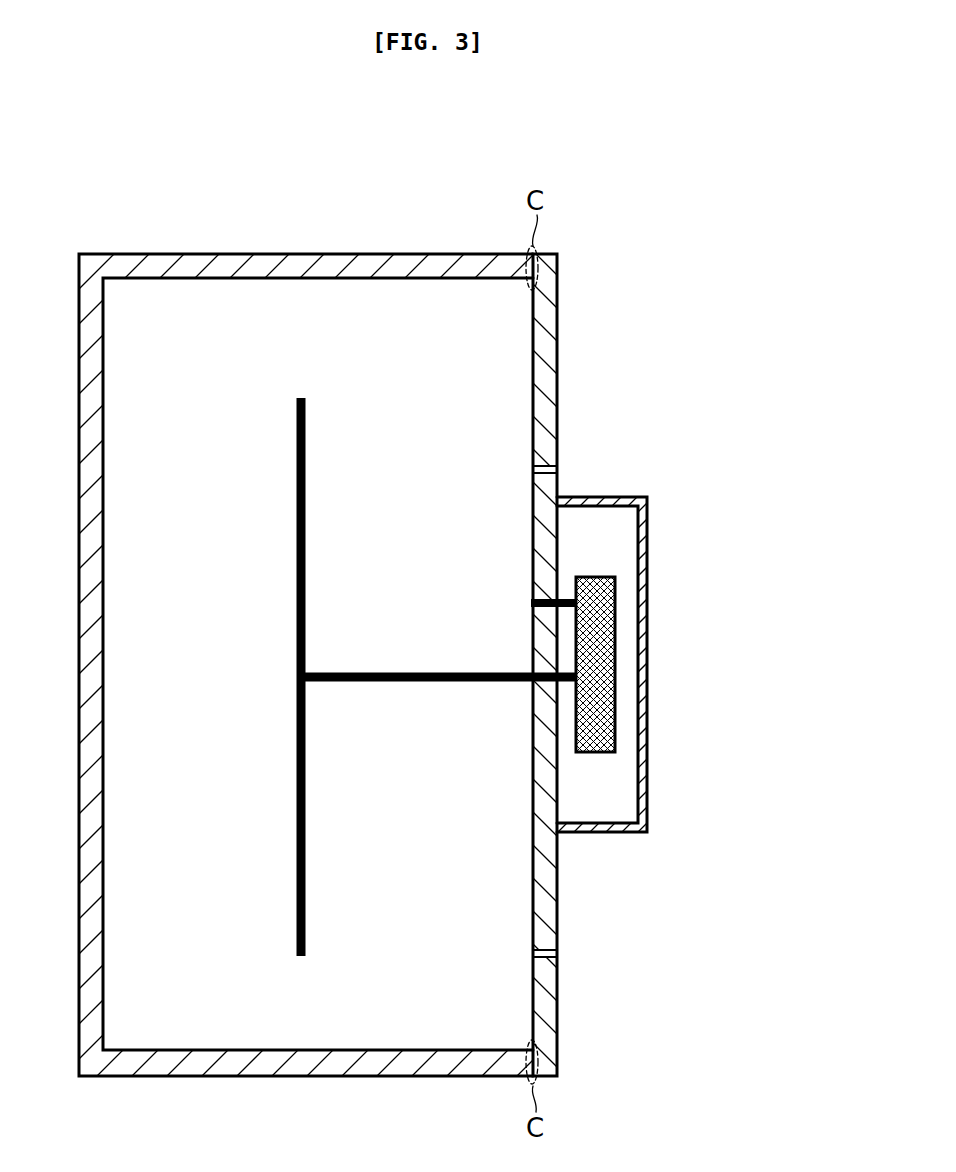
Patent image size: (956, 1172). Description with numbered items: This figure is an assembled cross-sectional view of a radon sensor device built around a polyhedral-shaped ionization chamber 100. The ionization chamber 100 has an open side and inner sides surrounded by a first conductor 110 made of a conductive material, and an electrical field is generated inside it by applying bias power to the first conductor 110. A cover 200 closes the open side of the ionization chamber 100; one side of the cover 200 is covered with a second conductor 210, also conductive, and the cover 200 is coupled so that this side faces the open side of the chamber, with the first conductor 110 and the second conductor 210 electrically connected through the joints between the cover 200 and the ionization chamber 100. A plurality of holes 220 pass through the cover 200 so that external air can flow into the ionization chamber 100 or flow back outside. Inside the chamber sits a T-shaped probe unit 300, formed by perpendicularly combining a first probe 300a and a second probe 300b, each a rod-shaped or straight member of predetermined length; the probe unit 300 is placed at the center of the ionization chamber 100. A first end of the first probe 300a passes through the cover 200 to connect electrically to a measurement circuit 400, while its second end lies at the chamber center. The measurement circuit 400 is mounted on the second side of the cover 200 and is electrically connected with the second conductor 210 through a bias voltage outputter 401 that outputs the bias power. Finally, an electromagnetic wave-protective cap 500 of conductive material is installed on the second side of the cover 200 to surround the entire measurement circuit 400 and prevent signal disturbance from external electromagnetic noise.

The ionization chamber 100 is at (306, 589).
The first conductor 110 is at (140, 270).
The cover 200 is at (625, 665).
The second conductor 210 is at (548, 368).
The holes 220 is at (557, 468).
The probe unit 300 is at (344, 768).
The first probe 300a is at (435, 682).
The second probe 300b is at (297, 425).
The measurement circuit 400 is at (653, 708).
The bias voltage outputter 401 is at (603, 582).
The electromagnetic wave-protective cap 500 is at (668, 652).